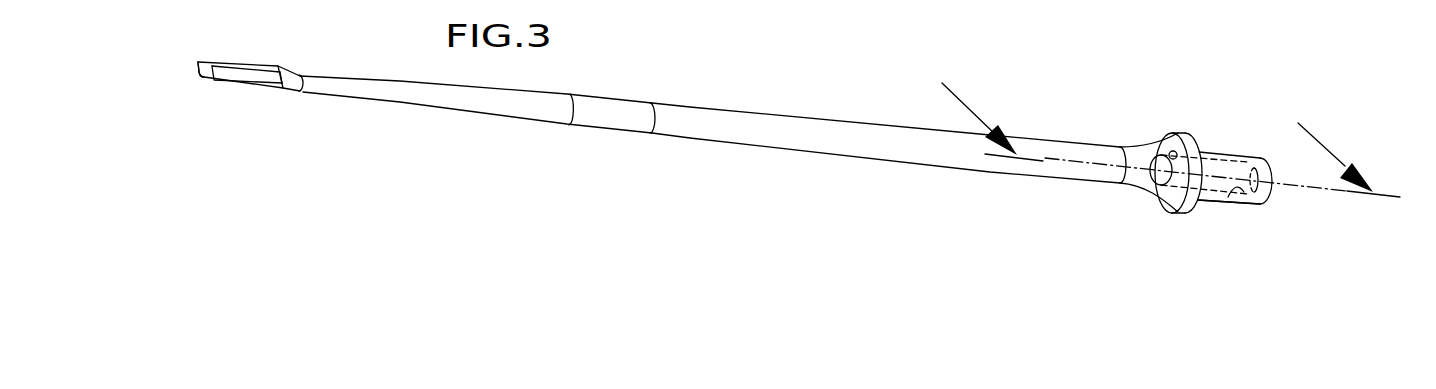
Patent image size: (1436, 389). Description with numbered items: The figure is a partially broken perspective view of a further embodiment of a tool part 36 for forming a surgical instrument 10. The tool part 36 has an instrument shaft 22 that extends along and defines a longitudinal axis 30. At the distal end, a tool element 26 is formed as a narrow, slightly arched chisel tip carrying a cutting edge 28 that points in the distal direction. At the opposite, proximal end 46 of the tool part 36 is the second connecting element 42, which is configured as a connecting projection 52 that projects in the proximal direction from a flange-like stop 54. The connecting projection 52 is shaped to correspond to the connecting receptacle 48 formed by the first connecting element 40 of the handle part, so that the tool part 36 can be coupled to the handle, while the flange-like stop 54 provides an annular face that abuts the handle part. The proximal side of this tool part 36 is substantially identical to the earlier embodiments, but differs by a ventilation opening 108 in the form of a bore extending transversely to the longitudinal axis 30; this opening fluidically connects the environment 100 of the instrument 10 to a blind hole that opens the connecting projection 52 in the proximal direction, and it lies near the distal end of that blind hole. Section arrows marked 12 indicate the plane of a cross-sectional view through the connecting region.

The instrument 10 is at (790, 108).
The section line 12 is at (1151, 140).
The instrument shaft 22 is at (693, 107).
The tool element 26 is at (257, 73).
The cutting edge 28 is at (198, 66).
The longitudinal axis 30 is at (1052, 160).
The tool part 36 is at (708, 163).
The first connecting element 40 is at (1228, 190).
The second connecting element 42 is at (1230, 204).
The proximal end 46 is at (1273, 188).
The connecting receptacle 48 is at (1204, 174).
The connecting projection 52 is at (1240, 152).
The flange-like stop 54 is at (1188, 140).
The environment 100 is at (1033, 96).
The ventilation opening 108 is at (1172, 151).